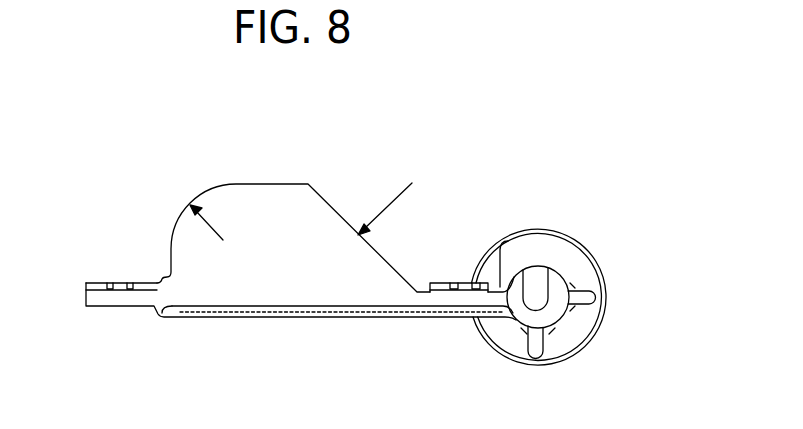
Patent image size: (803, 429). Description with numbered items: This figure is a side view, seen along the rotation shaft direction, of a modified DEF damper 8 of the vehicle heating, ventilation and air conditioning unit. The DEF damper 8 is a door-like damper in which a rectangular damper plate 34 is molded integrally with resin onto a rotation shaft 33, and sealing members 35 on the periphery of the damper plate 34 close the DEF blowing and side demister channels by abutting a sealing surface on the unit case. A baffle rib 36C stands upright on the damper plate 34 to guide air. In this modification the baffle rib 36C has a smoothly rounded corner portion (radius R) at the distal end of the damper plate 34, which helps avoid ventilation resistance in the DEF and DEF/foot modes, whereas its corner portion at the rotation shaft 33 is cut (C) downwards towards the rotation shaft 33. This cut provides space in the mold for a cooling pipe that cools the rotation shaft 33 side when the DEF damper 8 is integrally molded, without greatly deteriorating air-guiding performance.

The DEF damper 8 is at (512, 172).
The rotation shaft 33 is at (553, 313).
The damper plate 34 is at (137, 306).
The sealing members 35 is at (125, 283).
The baffle rib 36C is at (267, 198).